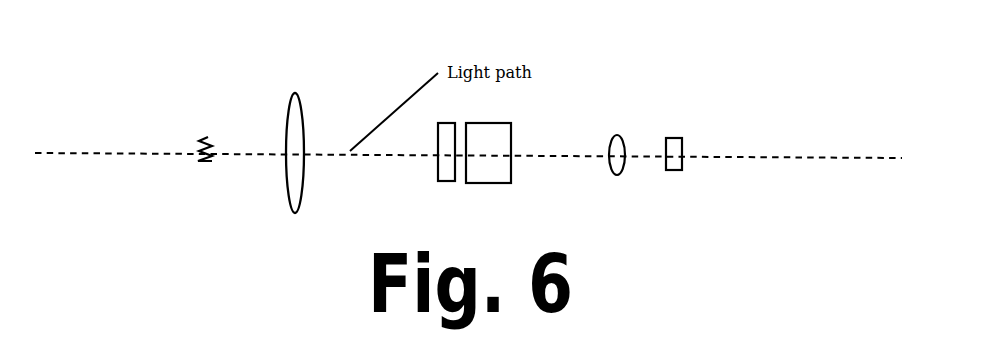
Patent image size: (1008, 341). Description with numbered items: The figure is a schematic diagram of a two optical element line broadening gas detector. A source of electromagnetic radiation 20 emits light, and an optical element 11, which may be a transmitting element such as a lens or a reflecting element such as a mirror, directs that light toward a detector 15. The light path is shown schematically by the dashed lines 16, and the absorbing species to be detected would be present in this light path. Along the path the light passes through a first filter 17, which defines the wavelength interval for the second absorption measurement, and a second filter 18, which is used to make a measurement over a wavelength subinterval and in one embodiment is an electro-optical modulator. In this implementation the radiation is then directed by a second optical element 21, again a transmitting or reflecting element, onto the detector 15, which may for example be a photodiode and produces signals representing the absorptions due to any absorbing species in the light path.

The source of electromagnetic radiation 20 is at (208, 137).
The optical element 11 is at (285, 108).
The first filter 17 is at (437, 172).
The second filter 18 is at (511, 175).
The dashed lines 16 is at (581, 154).
The second optical element 21 is at (623, 167).
The detector 15 is at (670, 138).